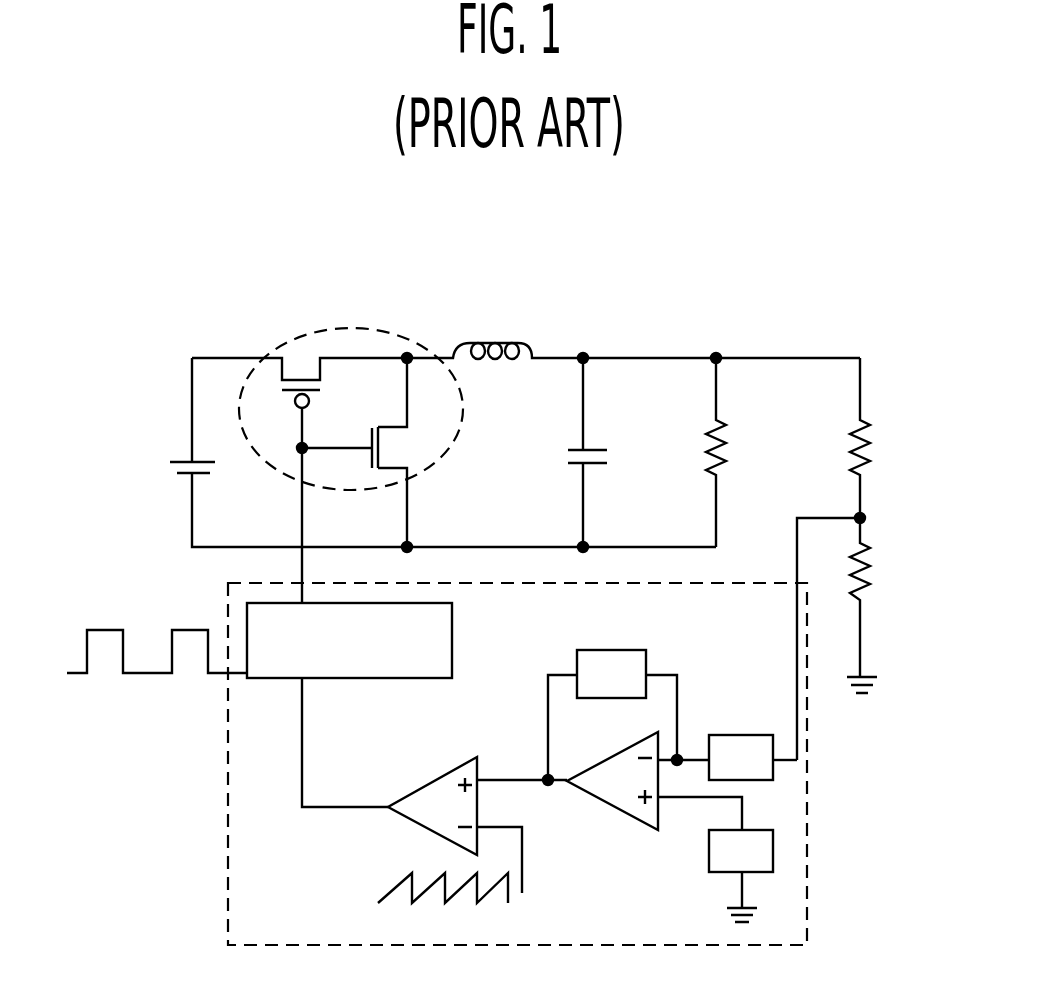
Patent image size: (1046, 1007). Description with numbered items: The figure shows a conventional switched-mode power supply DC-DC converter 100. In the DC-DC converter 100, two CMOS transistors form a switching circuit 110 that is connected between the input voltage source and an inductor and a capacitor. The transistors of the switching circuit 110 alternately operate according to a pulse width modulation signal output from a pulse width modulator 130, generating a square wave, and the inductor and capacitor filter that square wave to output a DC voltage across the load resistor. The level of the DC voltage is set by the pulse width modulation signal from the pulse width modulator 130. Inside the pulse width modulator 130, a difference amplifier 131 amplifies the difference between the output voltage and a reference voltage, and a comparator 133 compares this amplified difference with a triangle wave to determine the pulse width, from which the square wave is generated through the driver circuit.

The DC-DC converter 100 is at (200, 239).
The switching circuit 110 is at (327, 330).
The pulse width modulator 130 is at (807, 838).
The difference amplifier 131 is at (612, 808).
The comparator 133 is at (433, 780).